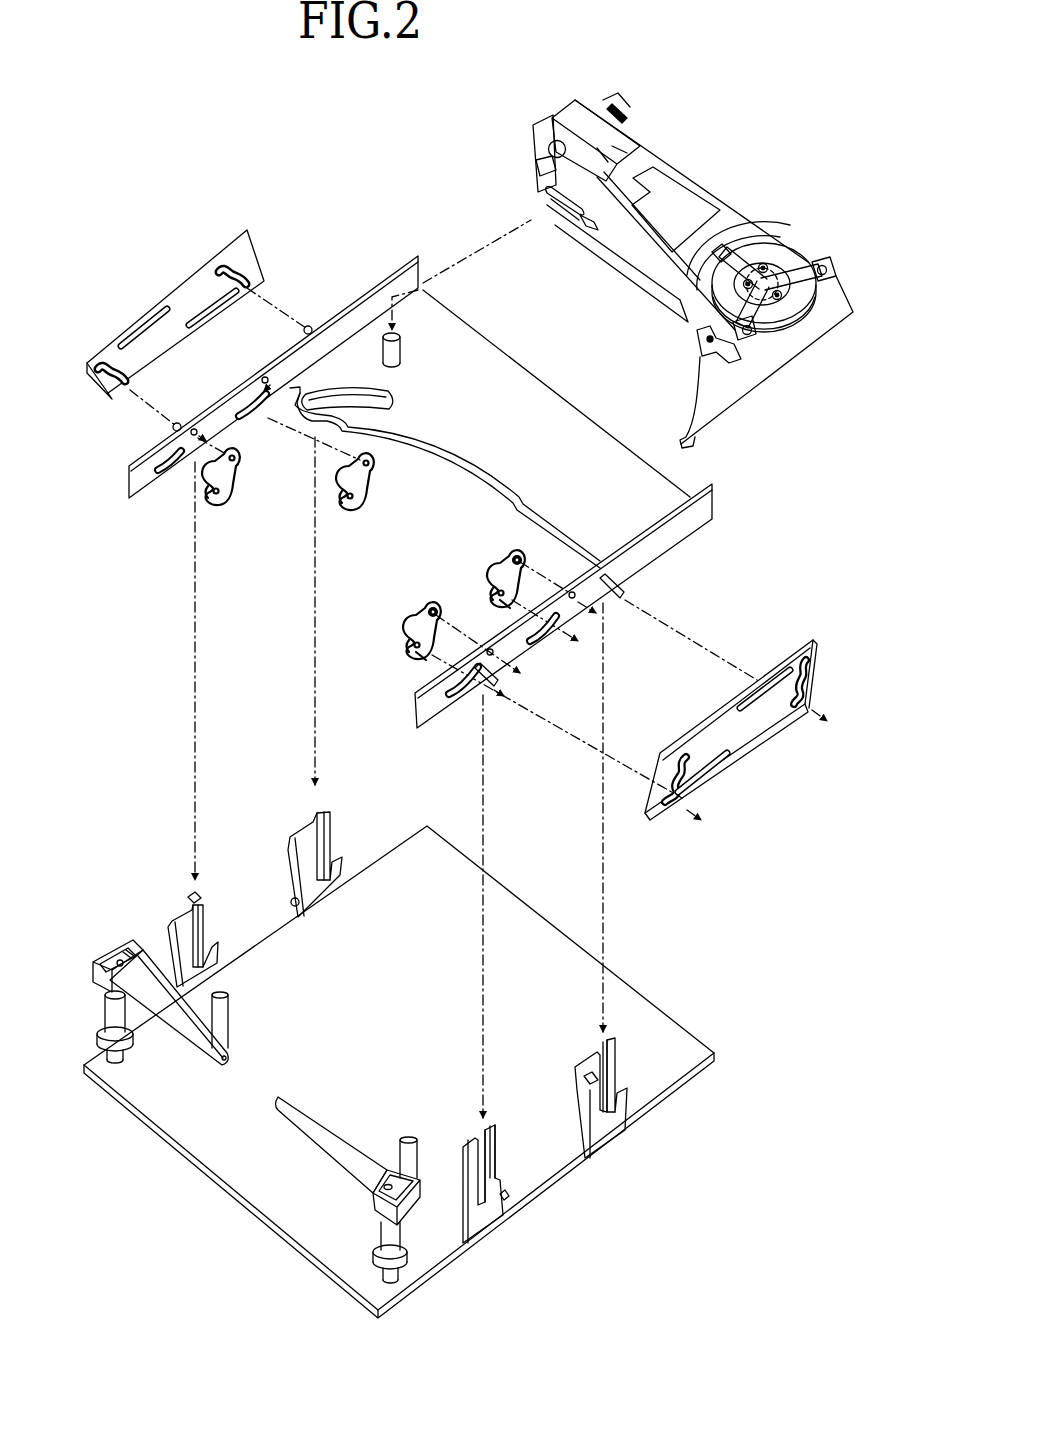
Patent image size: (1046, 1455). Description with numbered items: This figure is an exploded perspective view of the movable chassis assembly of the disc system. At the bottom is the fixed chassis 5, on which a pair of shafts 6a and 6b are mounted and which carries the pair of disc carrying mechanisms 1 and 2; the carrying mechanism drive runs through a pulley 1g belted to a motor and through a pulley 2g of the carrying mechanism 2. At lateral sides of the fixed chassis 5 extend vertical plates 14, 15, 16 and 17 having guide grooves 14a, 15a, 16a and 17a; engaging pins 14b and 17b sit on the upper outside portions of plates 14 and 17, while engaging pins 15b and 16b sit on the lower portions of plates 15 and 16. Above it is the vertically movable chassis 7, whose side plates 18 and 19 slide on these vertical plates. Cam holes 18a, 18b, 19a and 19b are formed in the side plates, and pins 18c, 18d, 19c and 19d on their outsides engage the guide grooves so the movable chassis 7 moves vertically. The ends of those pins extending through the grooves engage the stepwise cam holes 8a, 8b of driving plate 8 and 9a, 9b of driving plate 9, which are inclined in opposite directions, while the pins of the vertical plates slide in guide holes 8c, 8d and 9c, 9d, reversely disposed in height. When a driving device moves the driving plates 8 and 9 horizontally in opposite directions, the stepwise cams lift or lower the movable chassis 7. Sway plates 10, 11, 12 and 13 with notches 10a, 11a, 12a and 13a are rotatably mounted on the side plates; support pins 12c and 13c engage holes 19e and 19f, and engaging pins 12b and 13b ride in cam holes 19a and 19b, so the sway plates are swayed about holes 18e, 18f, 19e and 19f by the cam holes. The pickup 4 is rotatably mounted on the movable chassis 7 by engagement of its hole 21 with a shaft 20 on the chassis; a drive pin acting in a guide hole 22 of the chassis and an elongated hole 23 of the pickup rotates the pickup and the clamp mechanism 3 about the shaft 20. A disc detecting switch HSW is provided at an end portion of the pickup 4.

The disc carrying mechanism 1 is at (178, 1022).
The pulley 1g is at (102, 1040).
The disc carrying mechanism 2 is at (350, 1157).
The pulley 2g is at (403, 1270).
The clamp mechanism 3 is at (654, 270).
The pickup 4 is at (632, 139).
The fixed chassis 5 is at (262, 1190).
The shaft 6a is at (228, 1020).
The shaft 6b is at (410, 1138).
The movable chassis 7 is at (527, 390).
The driving plate 8 is at (258, 247).
The stepwise cam hole 8a is at (105, 395).
The stepwise cam hole 8b is at (260, 273).
The guide hole 8c is at (150, 318).
The guide hole 8d is at (222, 303).
The driving plate 9 is at (818, 652).
The stepwise cam hole 9a is at (680, 743).
The stepwise cam hole 9b is at (800, 687).
The guide hole 9c is at (722, 763).
The guide hole 9d is at (778, 677).
The sway plate 10 is at (236, 502).
The notch 10a is at (210, 518).
The sway plate 11 is at (372, 490).
The notch 11a is at (353, 505).
The sway plate 12 is at (403, 620).
The notch 12a is at (405, 643).
The engaging pin 12b is at (417, 660).
The support pin 12c is at (431, 606).
The sway plate 13 is at (488, 562).
The notch 13a is at (489, 585).
The engaging pin 13b is at (508, 601).
The support pin 13c is at (515, 556).
The vertical plate 14 is at (220, 955).
The guide groove 14a is at (198, 923).
The engaging pin 14b is at (187, 898).
The vertical plate 15 is at (343, 875).
The guide groove 15a is at (330, 827).
The engaging pin 15b is at (292, 897).
The vertical plate 16 is at (470, 1217).
The guide groove 16a is at (490, 1150).
The engaging pin 16b is at (508, 1193).
The vertical plate 17 is at (627, 1108).
The guide groove 17a is at (607, 1062).
The engaging pin 17b is at (588, 1077).
The side plate 18 is at (388, 277).
The cam hole 18a is at (170, 480).
The cam hole 18b is at (249, 419).
The pin 18c is at (176, 422).
The pin 18d is at (309, 326).
The hole 18e is at (197, 430).
The hole 18f is at (269, 381).
The side plate 19 is at (663, 550).
The cam hole 19a is at (458, 698).
The cam hole 19b is at (558, 634).
The pin 19c is at (495, 681).
The pin 19d is at (637, 578).
The hole 19e is at (493, 654).
The hole 19f is at (576, 598).
The shaft 20 is at (402, 355).
The hole 21 is at (548, 148).
The guide hole 22 is at (392, 399).
The elongated hole 23 is at (560, 212).
The disc detecting switch HSW is at (697, 355).